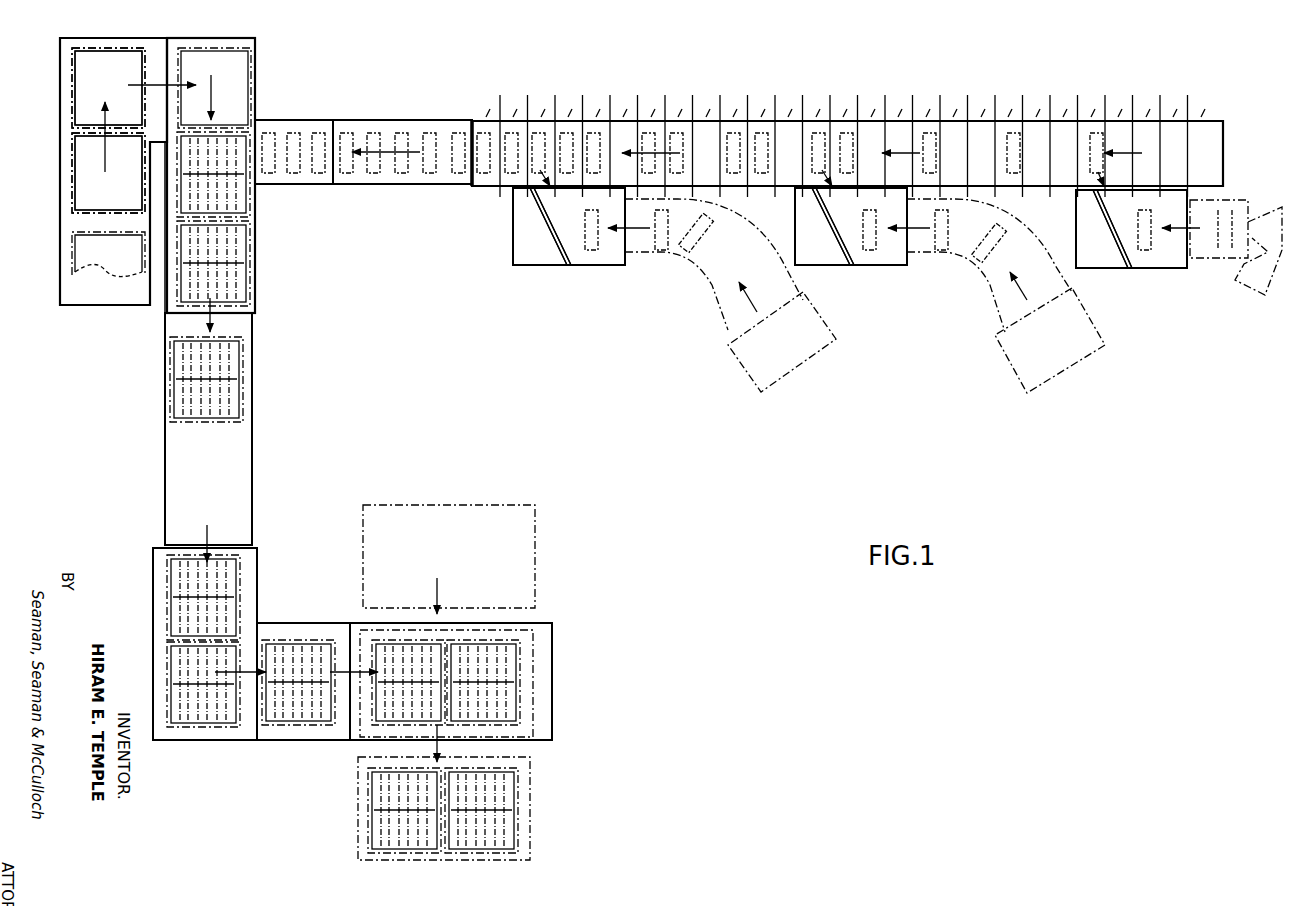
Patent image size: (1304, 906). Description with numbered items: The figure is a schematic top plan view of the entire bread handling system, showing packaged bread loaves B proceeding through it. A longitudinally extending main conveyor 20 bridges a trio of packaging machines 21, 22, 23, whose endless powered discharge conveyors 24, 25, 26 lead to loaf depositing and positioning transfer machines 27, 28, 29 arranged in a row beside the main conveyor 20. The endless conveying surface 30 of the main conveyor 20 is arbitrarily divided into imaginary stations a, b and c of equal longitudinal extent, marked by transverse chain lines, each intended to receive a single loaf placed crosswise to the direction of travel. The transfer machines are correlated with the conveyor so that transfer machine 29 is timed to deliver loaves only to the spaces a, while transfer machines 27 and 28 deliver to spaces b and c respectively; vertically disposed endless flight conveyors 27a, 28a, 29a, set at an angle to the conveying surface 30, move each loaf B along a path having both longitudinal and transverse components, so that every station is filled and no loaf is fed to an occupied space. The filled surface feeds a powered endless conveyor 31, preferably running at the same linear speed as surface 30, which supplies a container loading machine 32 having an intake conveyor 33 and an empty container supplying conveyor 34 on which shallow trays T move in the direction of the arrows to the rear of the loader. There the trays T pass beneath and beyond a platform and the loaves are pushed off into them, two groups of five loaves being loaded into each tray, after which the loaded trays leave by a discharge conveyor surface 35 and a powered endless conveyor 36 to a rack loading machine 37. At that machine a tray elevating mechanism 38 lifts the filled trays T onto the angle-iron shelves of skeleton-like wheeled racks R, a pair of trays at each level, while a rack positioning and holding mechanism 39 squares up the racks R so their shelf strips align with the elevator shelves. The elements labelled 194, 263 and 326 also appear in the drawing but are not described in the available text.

The main conveyor 20 is at (990, 118).
The packaging machine 21 is at (760, 362).
The packaging machine 22 is at (1020, 348).
The packaging machine 23 is at (1252, 286).
The discharge conveyor 24 is at (723, 287).
The discharge conveyor 25 is at (955, 265).
The discharge conveyor 26 is at (1212, 260).
The transfer machine 27 is at (511, 246).
The flight conveyor 27a is at (560, 262).
The transfer machine 28 is at (832, 268).
The flight conveyor 28a is at (848, 264).
The transfer machine 29 is at (1112, 272).
The flight conveyor 29a is at (1100, 208).
The endless conveying surface 30 is at (1072, 118).
The conveyor 31 is at (445, 190).
The container loading machine 32 is at (264, 58).
The intake conveyor 33 is at (316, 186).
The empty container supplying conveyor 34 is at (56, 205).
The discharge conveyor surface 35 is at (162, 306).
The powered endless conveyor 36 is at (258, 436).
The rack loading machine 37 is at (345, 620).
The tray elevating mechanism 38 is at (282, 620).
The rack positioning and holding mechanism 39 is at (556, 700).
The empty tray 194 is at (78, 78).
The tray accumulator 263 is at (256, 572).
The case supply 326 is at (538, 580).
The bread loaf B is at (290, 138).
The tray T is at (72, 152).
The rack R is at (540, 518).